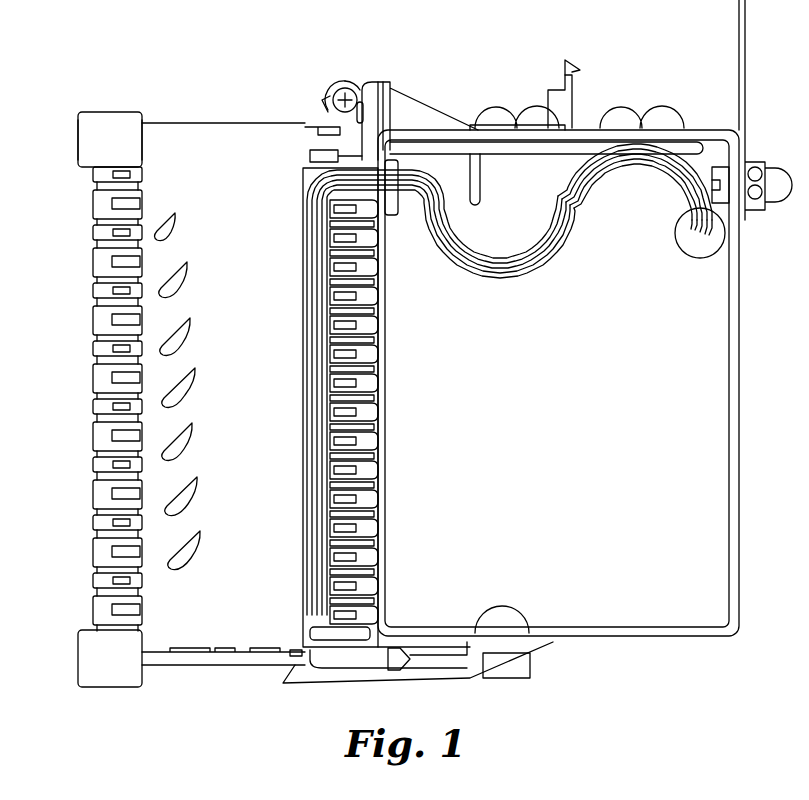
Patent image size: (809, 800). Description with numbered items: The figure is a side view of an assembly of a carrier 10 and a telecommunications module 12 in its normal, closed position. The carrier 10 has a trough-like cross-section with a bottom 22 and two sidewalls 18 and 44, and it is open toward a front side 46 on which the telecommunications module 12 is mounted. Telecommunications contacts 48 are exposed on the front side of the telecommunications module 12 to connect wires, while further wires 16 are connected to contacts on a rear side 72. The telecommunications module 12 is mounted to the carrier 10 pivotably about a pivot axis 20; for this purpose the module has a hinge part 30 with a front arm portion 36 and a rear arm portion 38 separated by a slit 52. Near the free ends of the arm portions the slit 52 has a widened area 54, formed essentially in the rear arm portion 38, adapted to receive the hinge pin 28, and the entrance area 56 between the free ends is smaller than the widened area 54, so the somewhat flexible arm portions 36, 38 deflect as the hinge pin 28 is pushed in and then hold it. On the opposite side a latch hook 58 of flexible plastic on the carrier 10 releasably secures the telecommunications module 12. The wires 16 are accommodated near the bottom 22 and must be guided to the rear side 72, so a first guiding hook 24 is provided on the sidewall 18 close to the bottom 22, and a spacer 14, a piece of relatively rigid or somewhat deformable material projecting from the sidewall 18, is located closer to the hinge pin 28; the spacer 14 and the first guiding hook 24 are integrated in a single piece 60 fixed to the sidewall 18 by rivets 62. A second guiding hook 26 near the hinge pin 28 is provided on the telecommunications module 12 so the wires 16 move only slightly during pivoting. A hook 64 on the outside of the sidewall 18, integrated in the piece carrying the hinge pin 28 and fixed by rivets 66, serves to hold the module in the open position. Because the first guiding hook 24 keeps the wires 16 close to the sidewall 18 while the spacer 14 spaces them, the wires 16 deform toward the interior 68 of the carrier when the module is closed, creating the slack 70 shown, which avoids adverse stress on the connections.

The carrier 10 is at (628, 633).
The telecommunications module 12 is at (201, 135).
The spacer 14 is at (482, 205).
The wires 16 is at (552, 264).
The sidewall 18 is at (722, 130).
The pivot axis 20 is at (345, 88).
The bottom 22 is at (728, 404).
The first guiding hook 24 is at (606, 162).
The second guiding hook 26 is at (393, 200).
The hinge pin 28 is at (325, 97).
The hinge part 30 is at (330, 92).
The front arm portion 36 is at (338, 86).
The rear arm portion 38 is at (372, 84).
The sidewall 44 is at (598, 640).
The front side 46 is at (65, 302).
The telecommunications contacts 48 is at (94, 620).
The slit 52 is at (337, 150).
The widened area 54 is at (330, 127).
The entrance area 56 is at (353, 90).
The latch hook 58 is at (300, 684).
The single piece 60 is at (550, 154).
The rivets 62 is at (656, 118).
The hook 64 is at (571, 62).
The rivets 66 is at (494, 112).
The interior 68 is at (581, 484).
The slack 70 is at (474, 264).
The rear side 72 is at (535, 400).